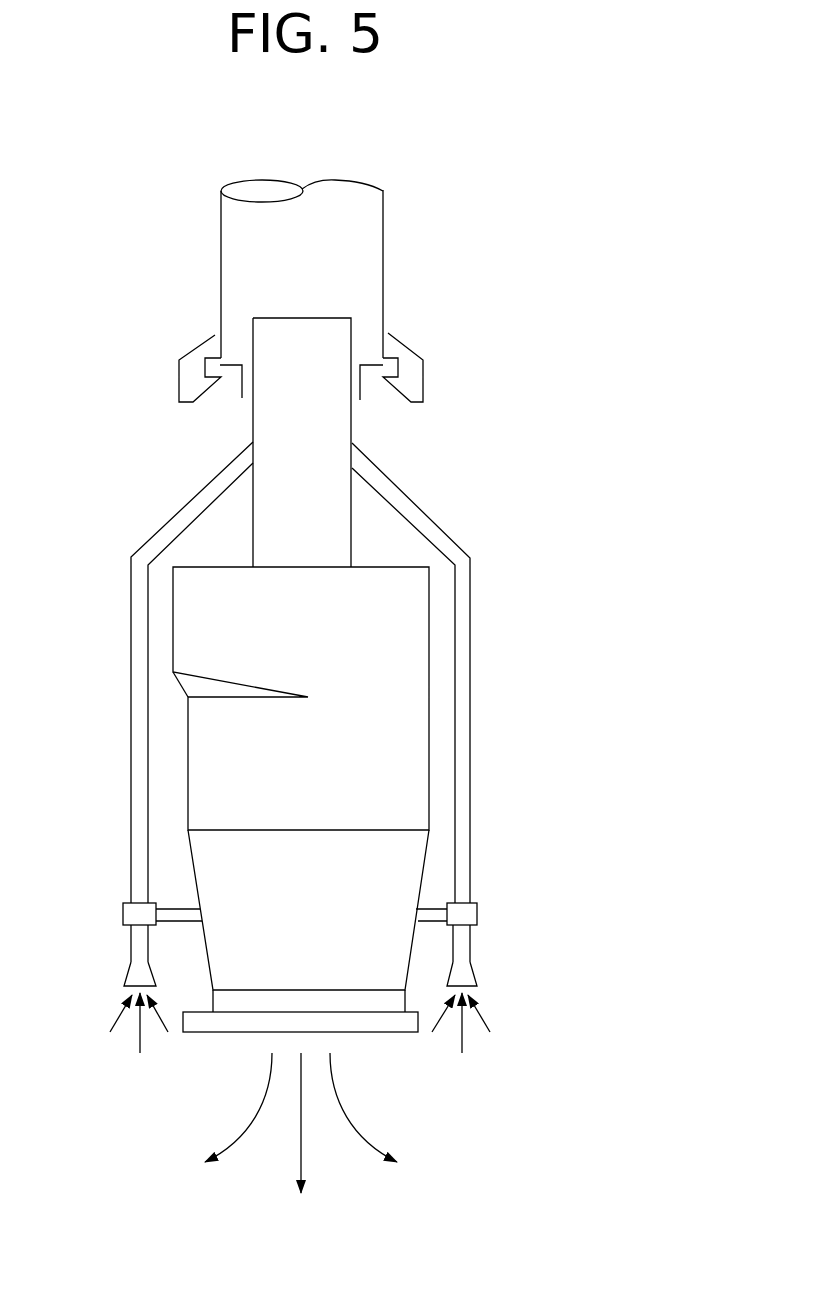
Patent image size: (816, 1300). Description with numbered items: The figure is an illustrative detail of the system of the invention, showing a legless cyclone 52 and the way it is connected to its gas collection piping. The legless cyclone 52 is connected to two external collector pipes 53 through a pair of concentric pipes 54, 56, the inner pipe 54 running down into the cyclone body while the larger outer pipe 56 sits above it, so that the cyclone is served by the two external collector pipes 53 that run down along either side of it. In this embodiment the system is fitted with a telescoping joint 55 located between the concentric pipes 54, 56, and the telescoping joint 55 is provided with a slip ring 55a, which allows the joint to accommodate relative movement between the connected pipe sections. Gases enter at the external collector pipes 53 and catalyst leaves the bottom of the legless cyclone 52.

The legless cyclone 52 is at (402, 745).
The external collector pipes 53 is at (141, 943).
The concentric pipe 54 is at (352, 428).
The telescoping joint 55 is at (425, 380).
The slip ring 55a is at (240, 400).
The concentric pipe 56 is at (383, 230).